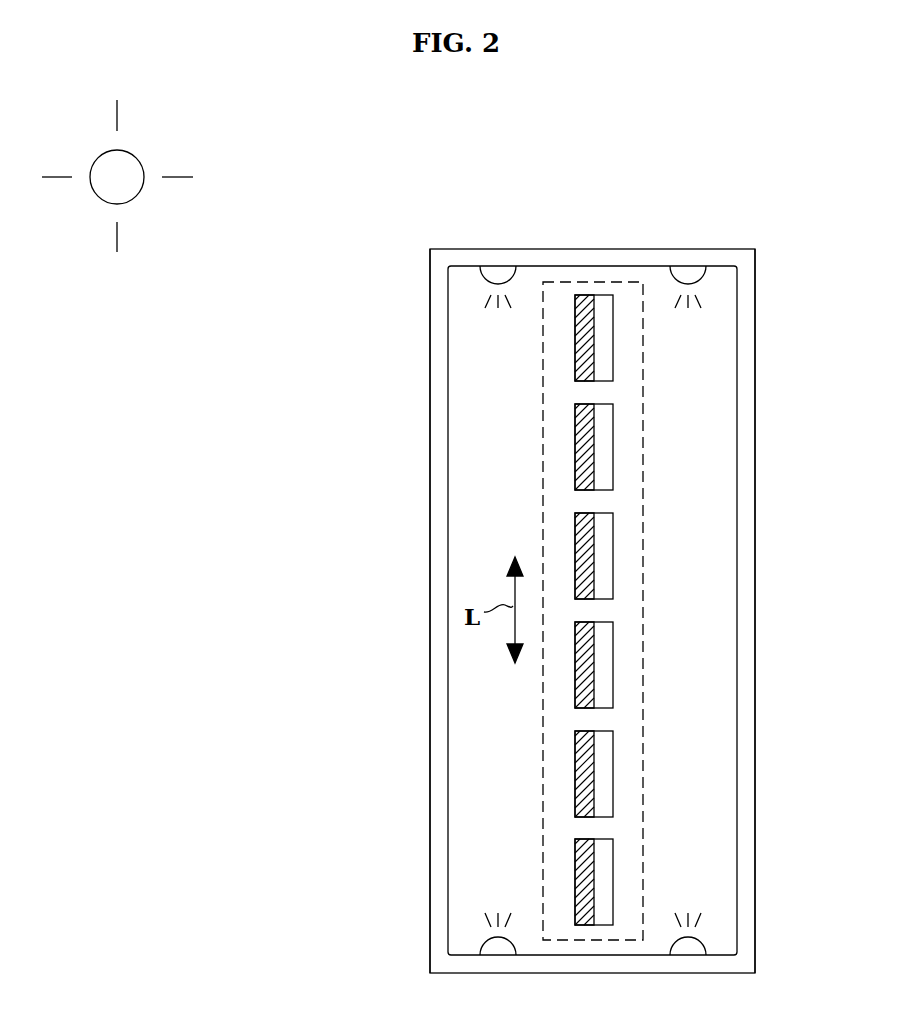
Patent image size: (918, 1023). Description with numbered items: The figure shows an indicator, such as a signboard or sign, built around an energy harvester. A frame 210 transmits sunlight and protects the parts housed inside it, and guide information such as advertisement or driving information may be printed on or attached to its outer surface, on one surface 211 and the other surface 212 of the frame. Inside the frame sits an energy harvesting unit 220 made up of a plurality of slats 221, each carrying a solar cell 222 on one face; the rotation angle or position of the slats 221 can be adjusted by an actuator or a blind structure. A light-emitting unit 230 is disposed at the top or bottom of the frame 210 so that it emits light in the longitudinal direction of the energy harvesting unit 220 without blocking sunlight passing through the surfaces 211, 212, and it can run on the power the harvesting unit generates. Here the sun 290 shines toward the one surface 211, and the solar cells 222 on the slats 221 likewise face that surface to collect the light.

The frame 210 is at (715, 249).
The one surface of the frame 211 is at (430, 684).
The other surface of the frame 212 is at (755, 683).
The energy harvesting unit 220 is at (643, 500).
The slat 221 is at (613, 421).
The solar cell 222 is at (575, 432).
The light-emitting unit 230 is at (482, 275).
The sun 290 is at (137, 157).